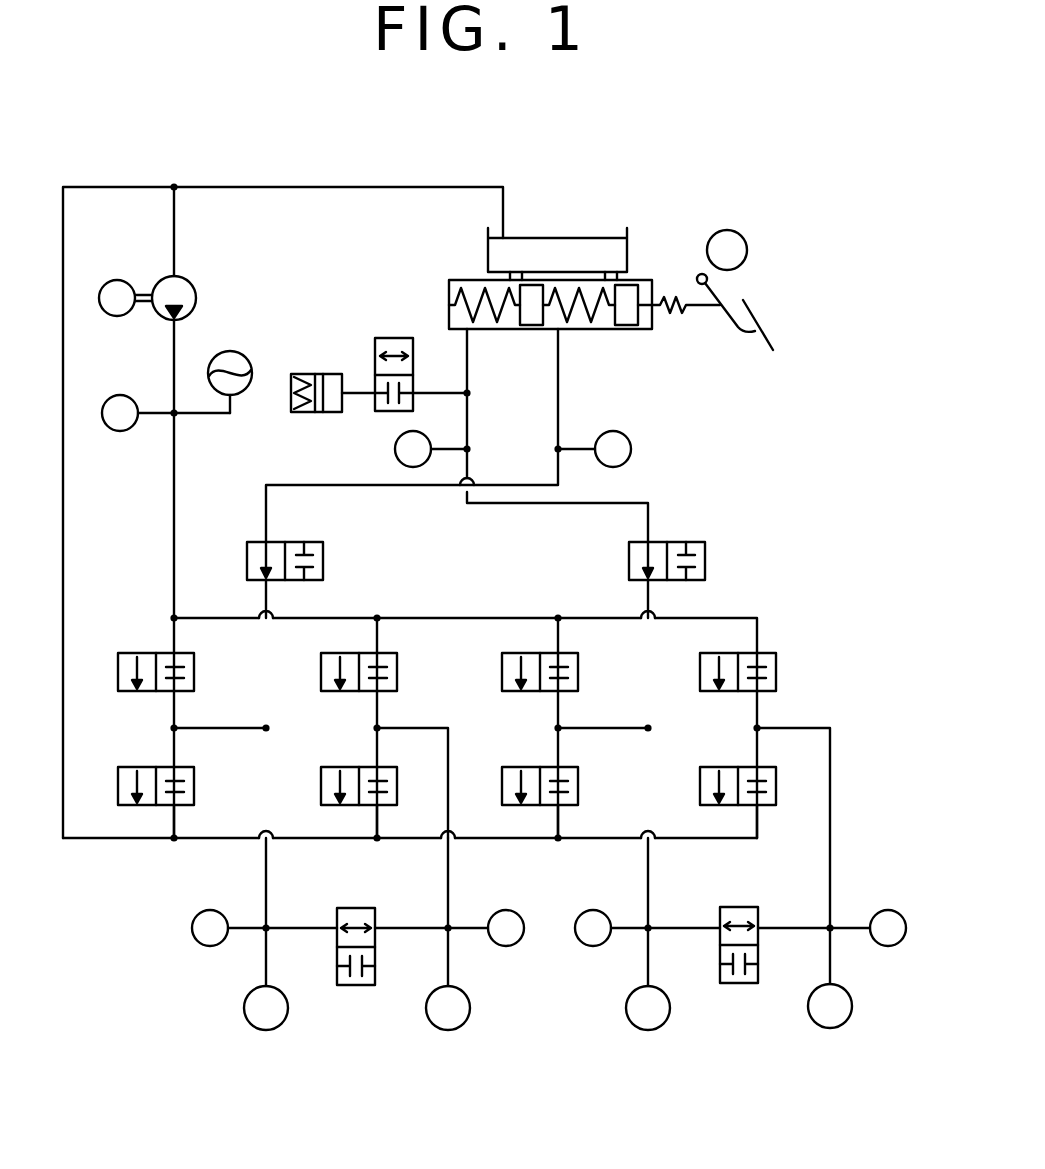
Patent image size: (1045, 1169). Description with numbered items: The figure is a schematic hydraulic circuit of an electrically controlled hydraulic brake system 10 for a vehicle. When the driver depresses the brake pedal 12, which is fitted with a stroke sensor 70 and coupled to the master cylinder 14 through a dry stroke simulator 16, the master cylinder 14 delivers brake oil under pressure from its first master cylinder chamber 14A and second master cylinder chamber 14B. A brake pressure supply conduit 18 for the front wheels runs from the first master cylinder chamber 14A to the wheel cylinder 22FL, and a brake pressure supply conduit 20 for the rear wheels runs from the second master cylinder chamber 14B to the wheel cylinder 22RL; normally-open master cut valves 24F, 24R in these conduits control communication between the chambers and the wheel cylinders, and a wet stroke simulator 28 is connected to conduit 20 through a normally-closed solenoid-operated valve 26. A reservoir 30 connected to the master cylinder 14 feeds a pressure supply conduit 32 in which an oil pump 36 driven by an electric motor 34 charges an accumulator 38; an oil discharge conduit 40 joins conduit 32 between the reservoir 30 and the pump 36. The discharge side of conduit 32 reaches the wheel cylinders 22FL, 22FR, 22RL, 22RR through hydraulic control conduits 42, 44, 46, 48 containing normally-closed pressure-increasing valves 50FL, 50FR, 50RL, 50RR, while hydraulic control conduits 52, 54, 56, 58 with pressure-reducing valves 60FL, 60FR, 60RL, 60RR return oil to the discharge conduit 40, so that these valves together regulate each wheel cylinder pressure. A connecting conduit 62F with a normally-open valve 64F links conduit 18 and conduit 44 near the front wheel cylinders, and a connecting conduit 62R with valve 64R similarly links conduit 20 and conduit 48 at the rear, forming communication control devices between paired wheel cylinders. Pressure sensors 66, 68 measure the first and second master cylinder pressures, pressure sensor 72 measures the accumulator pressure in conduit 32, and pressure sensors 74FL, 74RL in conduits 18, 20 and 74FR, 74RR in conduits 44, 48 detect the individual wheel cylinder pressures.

The hydraulic brake system 10 is at (633, 190).
The brake pedal 12 is at (768, 342).
The master cylinder 14 is at (540, 305).
The first master cylinder chamber 14A is at (602, 322).
The second master cylinder chamber 14B is at (490, 322).
The dry stroke simulator 16 is at (674, 313).
The brake pressure supply conduit for front wheels 18 is at (558, 404).
The brake pressure supply conduit for rear wheels 20 is at (462, 432).
The wheel cylinder 22FL is at (266, 1030).
The wheel cylinder 22FR is at (448, 1030).
The wheel cylinder 22RL is at (648, 1030).
The wheel cylinder 22RR is at (830, 1028).
The solenoid-operated valve 24F is at (323, 560).
The solenoid-operated valve 24R is at (705, 560).
The solenoid-operated valve 26 is at (389, 338).
The wet stroke simulator 28 is at (297, 412).
The reservoir 30 is at (548, 250).
The pressure supply conduit 32 is at (306, 189).
The electric motor 34 is at (117, 280).
The oil pump 36 is at (196, 290).
The accumulator 38 is at (245, 358).
The oil discharge conduit 40 is at (63, 553).
The hydraulic control conduit 42 is at (232, 728).
The hydraulic control conduit 44 is at (426, 728).
The hydraulic control conduit 46 is at (610, 728).
The hydraulic control conduit 48 is at (830, 815).
The solenoid-operated valve 50FL is at (118, 672).
The solenoid-operated valve 50FR is at (321, 676).
The solenoid-operated valve 50RL is at (502, 676).
The solenoid-operated valve 50RR is at (776, 672).
The hydraulic control conduit 52 is at (174, 828).
The hydraulic control conduit 54 is at (377, 828).
The hydraulic control conduit 56 is at (558, 828).
The hydraulic control conduit 58 is at (757, 838).
The solenoid-operated valve 60FL is at (118, 785).
The solenoid-operated valve 60FR is at (321, 786).
The solenoid-operated valve 60RL is at (502, 786).
The solenoid-operated valve 60RR is at (700, 785).
The connecting conduit 62F is at (307, 928).
The connecting conduit 62R is at (700, 928).
The solenoid-operated valve 64F is at (356, 985).
The solenoid-operated valve 64R is at (739, 983).
The pressure sensor 66 is at (631, 449).
The pressure sensor 68 is at (395, 449).
The stroke sensor 70 is at (747, 246).
The pressure sensor 72 is at (120, 431).
The pressure sensor 74FL is at (196, 940).
The pressure sensor 74FR is at (494, 912).
The pressure sensor 74RL is at (590, 948).
The pressure sensor 74RR is at (878, 912).